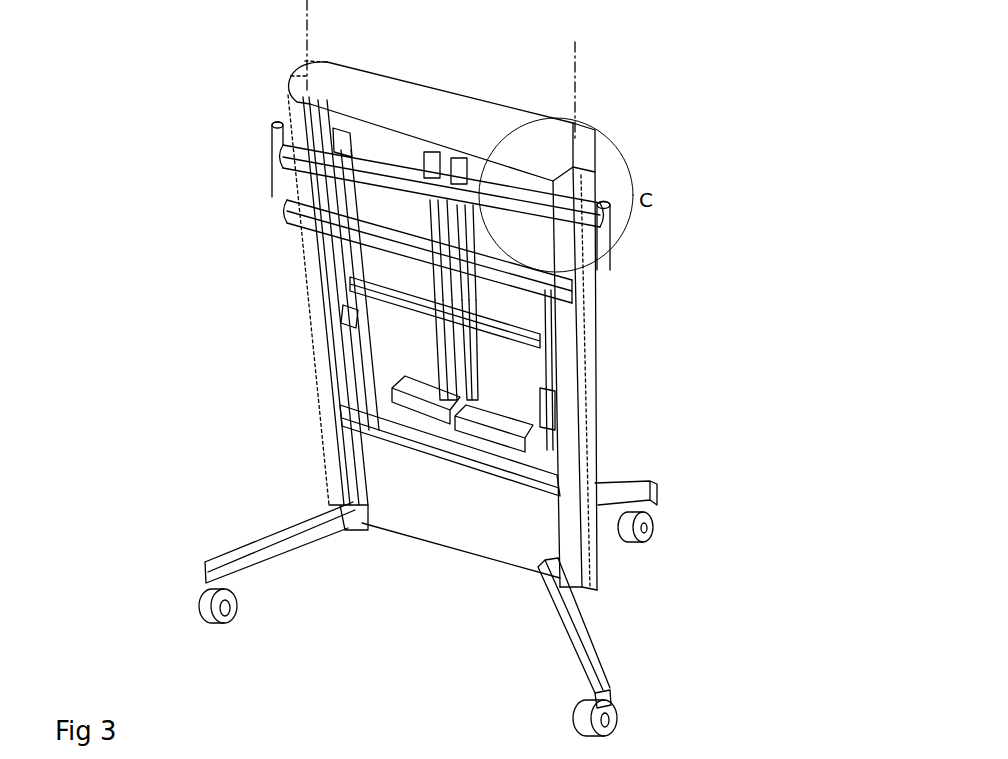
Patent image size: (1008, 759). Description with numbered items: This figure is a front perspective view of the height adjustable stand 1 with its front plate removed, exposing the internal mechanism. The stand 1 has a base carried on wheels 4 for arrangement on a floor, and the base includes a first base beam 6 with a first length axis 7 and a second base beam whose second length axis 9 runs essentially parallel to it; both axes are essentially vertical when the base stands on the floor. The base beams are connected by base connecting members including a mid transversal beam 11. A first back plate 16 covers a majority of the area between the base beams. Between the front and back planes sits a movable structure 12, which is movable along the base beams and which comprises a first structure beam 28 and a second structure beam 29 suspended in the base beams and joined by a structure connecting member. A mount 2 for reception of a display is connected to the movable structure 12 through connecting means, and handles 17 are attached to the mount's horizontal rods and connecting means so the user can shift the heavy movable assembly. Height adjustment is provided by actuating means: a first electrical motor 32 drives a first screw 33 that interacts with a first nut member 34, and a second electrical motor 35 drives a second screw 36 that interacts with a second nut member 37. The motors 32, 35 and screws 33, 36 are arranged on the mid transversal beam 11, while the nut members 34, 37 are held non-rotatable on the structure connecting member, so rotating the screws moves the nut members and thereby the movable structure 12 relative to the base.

The height adjustable stand 1 is at (668, 448).
The mount 2 is at (354, 249).
The wheels 4 is at (212, 600).
The first base beam 6 is at (300, 113).
The first length axis 7 is at (307, 32).
The second length axis 9 is at (575, 77).
The mid transversal beam 11 is at (523, 448).
The movable structure 12 is at (527, 340).
The first back plate 16 is at (390, 338).
The handles 17 is at (282, 172).
The first structure beam 28 is at (355, 317).
The second structure beam 29 is at (543, 423).
The first electrical motor 32 is at (408, 393).
The first screw 33 is at (442, 343).
The first nut member 34 is at (433, 280).
The second electrical motor 35 is at (498, 422).
The second screw 36 is at (470, 355).
The second nut member 37 is at (463, 288).